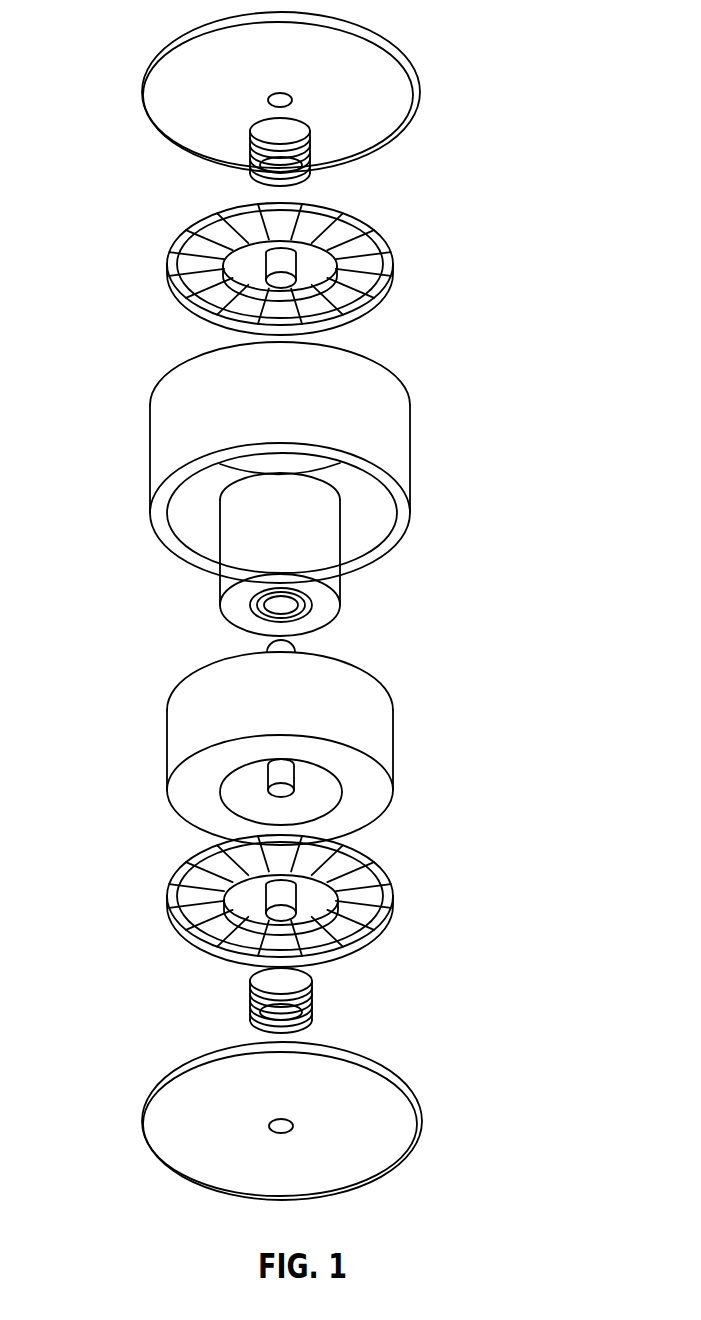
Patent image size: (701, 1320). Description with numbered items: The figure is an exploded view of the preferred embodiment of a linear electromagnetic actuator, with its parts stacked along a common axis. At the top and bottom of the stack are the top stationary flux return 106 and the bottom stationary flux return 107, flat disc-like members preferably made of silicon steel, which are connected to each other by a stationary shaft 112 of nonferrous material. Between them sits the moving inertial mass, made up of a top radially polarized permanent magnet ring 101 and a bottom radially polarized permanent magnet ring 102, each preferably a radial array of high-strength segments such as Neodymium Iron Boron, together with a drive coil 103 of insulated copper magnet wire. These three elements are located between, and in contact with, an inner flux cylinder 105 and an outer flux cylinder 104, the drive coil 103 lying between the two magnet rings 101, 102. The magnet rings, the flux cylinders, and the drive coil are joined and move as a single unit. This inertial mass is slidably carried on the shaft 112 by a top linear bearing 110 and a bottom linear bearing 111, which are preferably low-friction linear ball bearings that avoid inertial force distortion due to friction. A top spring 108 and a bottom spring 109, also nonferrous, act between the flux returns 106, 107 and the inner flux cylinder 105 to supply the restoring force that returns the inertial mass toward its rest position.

The top radially polarized permanent magnet ring 101 is at (287, 269).
The bottom radially polarized permanent magnet ring 102 is at (296, 901).
The drive coil 103 is at (279, 742).
The outer flux cylinder 104 is at (231, 405).
The inner flux cylinder 105 is at (243, 538).
The top stationary flux return 106 is at (393, 95).
The bottom stationary flux return 107 is at (203, 1098).
The top spring 108 is at (302, 135).
The bottom spring 109 is at (252, 990).
The top linear bearing 110 is at (270, 263).
The bottom linear bearing 111 is at (280, 892).
The stationary shaft 112 is at (280, 772).